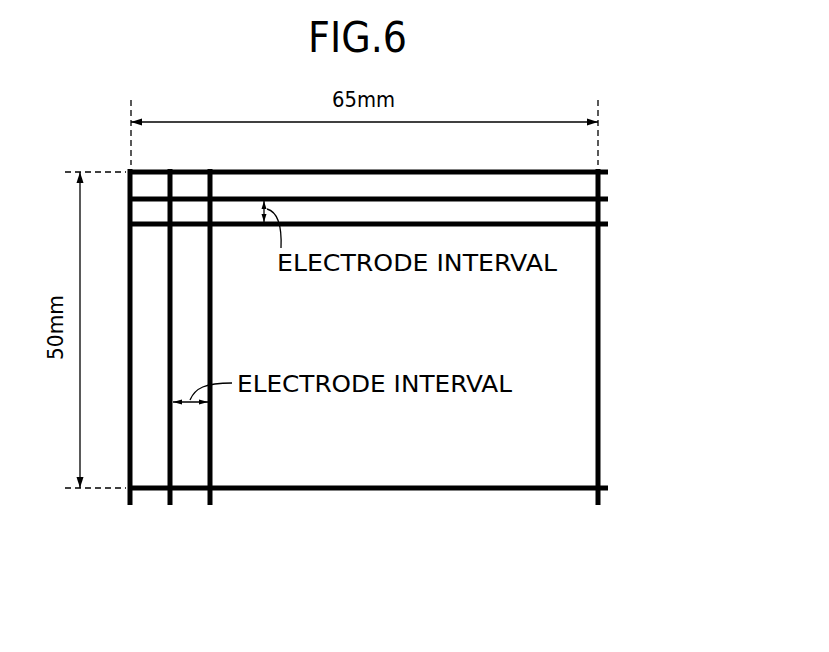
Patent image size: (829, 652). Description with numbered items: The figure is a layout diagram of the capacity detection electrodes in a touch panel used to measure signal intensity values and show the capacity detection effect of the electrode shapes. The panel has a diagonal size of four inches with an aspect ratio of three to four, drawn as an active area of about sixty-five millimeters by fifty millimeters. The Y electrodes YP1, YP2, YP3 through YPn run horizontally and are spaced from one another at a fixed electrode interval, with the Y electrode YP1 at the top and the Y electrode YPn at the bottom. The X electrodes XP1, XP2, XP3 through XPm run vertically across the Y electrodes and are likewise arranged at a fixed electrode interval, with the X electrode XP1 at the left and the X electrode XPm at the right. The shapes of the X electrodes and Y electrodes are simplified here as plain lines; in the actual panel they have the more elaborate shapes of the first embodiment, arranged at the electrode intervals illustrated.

The Y electrode YP1 is at (606, 168).
The Y electrode YP2 is at (608, 199).
The Y electrode YP3 is at (608, 224).
The Y electrode YPn is at (606, 488).
The X electrode XP1 is at (128, 498).
The X electrode XP2 is at (170, 505).
The X electrode XP3 is at (212, 500).
The X electrode XPm is at (595, 497).